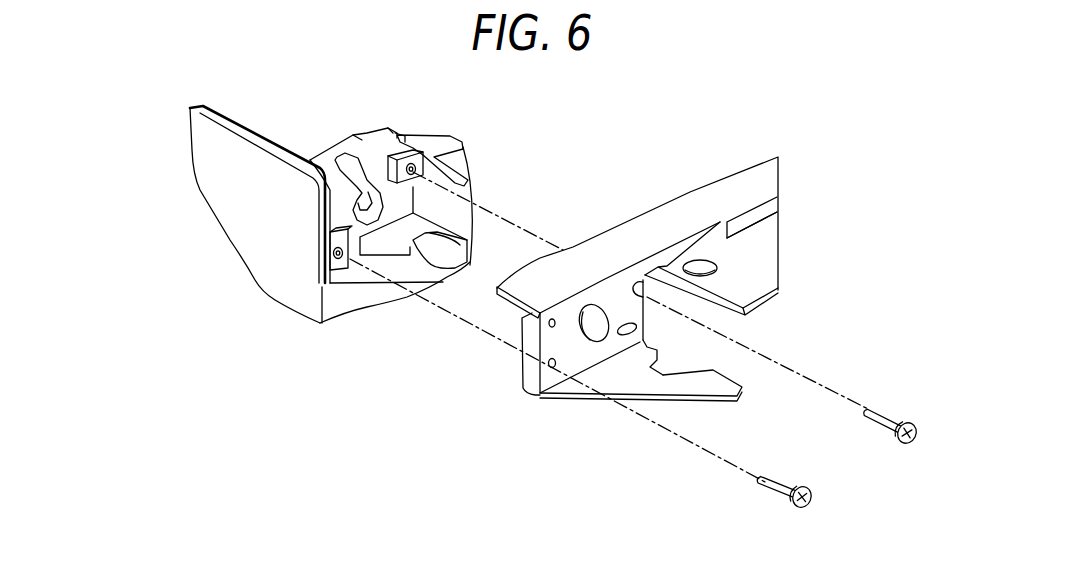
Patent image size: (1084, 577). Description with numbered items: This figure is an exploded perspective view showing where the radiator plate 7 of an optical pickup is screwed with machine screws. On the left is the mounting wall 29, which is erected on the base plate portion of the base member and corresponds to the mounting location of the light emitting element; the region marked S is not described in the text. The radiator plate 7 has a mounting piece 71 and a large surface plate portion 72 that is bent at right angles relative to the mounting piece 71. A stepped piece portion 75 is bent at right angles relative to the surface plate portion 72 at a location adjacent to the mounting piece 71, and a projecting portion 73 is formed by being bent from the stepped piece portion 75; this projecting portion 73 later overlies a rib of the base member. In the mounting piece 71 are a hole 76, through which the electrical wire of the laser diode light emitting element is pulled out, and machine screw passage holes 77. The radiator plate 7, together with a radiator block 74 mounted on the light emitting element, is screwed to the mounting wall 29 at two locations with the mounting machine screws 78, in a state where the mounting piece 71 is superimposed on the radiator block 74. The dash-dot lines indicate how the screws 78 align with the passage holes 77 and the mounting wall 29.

The mounting wall 29 is at (327, 157).
The sensor mounting space S is at (443, 203).
The radiator plate 7 is at (785, 180).
The mounting piece 71 is at (540, 360).
The surface plate portion 72 is at (702, 202).
The projecting portion 73 is at (768, 253).
The radiator block 74 is at (522, 366).
The stepped piece portion 75 is at (680, 250).
The hole 76 is at (597, 303).
The machine screw passage holes 77 is at (640, 303).
The mounting machine screw 78 is at (892, 413).